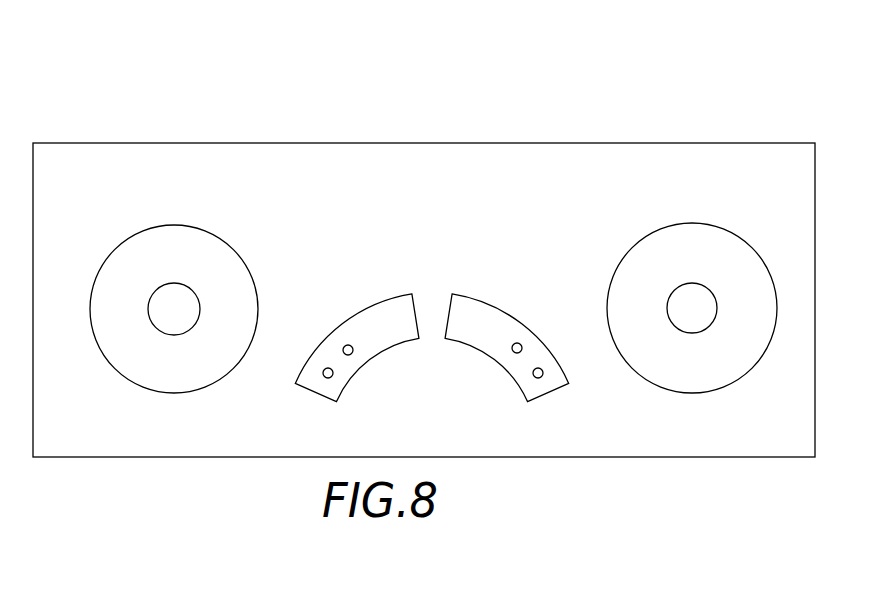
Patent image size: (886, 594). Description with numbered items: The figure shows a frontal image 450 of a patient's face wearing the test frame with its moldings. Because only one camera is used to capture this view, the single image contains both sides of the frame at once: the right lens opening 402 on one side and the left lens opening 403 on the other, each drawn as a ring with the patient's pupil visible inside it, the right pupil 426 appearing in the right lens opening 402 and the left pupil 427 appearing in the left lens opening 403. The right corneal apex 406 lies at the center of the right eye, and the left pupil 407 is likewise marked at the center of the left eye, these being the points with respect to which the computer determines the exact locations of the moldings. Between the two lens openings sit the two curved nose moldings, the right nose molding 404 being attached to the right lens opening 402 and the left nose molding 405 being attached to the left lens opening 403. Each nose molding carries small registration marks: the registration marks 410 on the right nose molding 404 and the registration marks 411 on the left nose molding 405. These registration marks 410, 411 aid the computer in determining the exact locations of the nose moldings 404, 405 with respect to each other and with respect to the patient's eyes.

The frontal image 450 is at (740, 120).
The right lens opening 402 is at (142, 245).
The right pupil 426 is at (182, 280).
The right corneal apex 406 is at (180, 317).
The left lens opening 403 is at (627, 298).
The left pupil 427 is at (700, 283).
The left pupil 407 is at (697, 305).
The right nose molding 404 is at (377, 318).
The left nose molding 405 is at (477, 322).
The registration marks 410 is at (350, 355).
The registration marks 411 is at (515, 353).